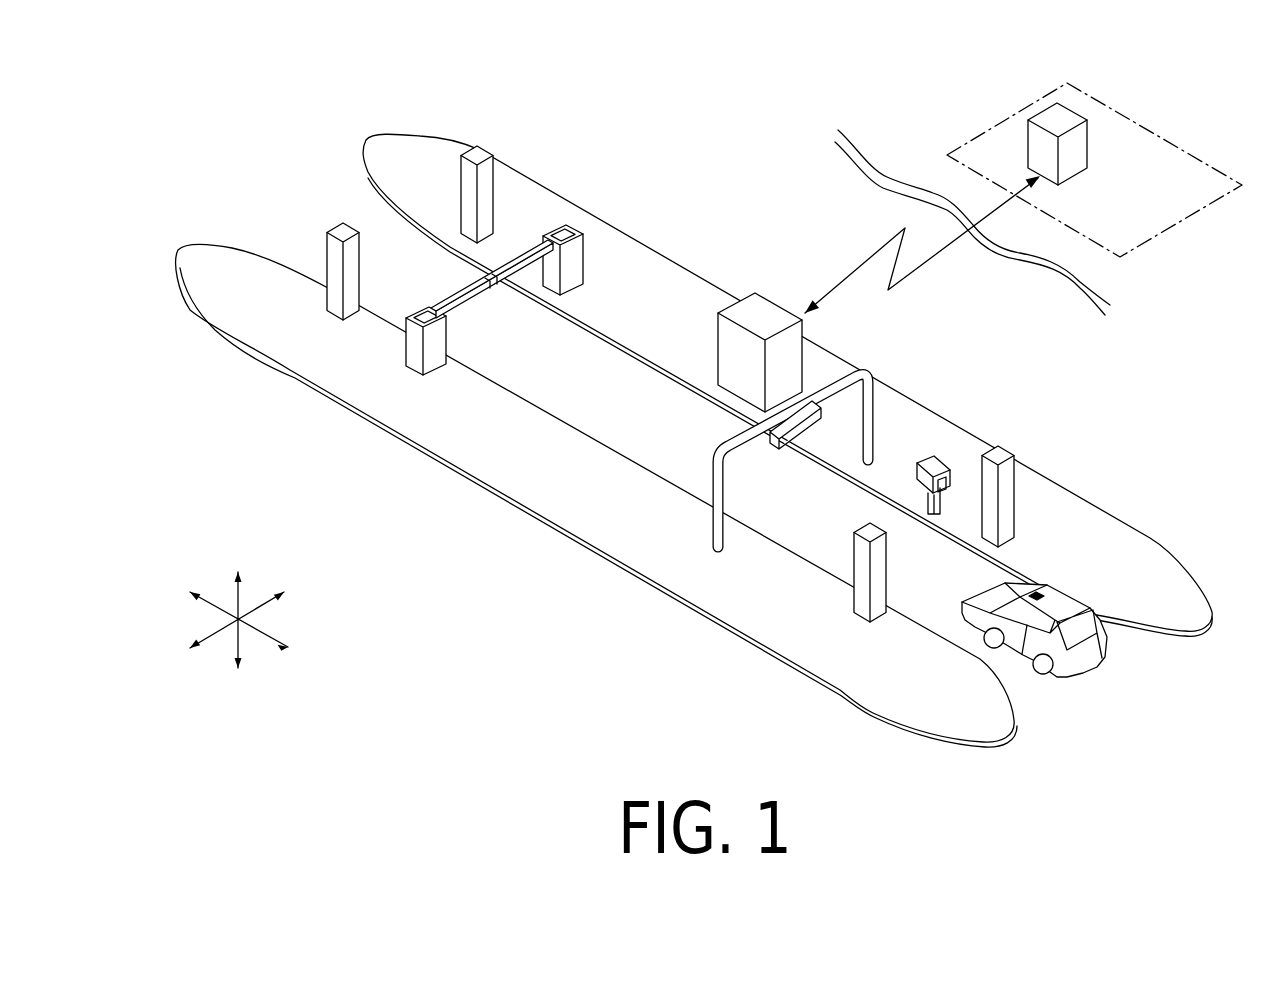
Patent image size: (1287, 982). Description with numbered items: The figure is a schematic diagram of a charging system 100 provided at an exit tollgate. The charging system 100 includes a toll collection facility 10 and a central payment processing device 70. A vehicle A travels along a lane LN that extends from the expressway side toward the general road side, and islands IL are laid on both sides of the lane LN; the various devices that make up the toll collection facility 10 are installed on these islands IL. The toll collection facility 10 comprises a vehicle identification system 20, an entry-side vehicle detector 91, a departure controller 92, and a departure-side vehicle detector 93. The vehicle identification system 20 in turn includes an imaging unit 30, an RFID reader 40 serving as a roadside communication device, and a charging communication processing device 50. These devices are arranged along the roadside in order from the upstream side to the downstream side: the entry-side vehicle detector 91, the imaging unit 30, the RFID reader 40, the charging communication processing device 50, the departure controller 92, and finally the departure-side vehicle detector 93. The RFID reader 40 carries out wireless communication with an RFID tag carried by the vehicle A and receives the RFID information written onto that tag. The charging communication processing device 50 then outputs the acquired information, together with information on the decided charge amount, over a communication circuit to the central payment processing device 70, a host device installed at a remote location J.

The charging system 100 is at (737, 97).
The toll collection facility 10 is at (315, 165).
The vehicle identification system 20 is at (888, 389).
The imaging unit 30 is at (940, 462).
The RFID reader 40 is at (798, 430).
The charging communication processing device 50 is at (789, 295).
The central payment processing device 70 is at (1087, 143).
The entry-side vehicle detector 91 is at (862, 597).
The departure controller 92 is at (574, 224).
The departure-side vehicle detector 93 is at (496, 191).
The remote location J is at (1197, 215).
The vehicle A is at (1062, 608).
The island IL is at (1170, 603).
The lane LN is at (657, 422).